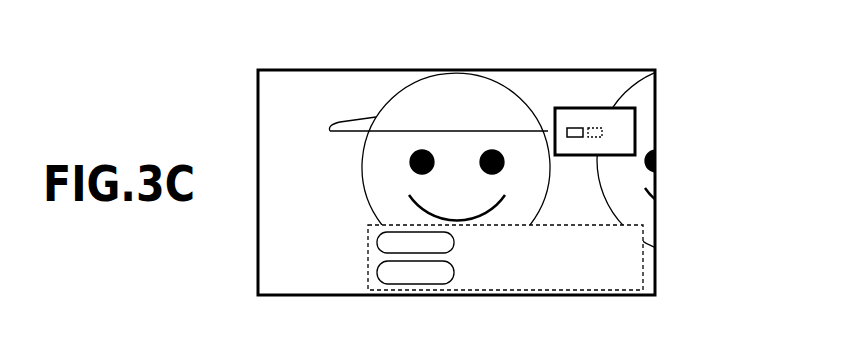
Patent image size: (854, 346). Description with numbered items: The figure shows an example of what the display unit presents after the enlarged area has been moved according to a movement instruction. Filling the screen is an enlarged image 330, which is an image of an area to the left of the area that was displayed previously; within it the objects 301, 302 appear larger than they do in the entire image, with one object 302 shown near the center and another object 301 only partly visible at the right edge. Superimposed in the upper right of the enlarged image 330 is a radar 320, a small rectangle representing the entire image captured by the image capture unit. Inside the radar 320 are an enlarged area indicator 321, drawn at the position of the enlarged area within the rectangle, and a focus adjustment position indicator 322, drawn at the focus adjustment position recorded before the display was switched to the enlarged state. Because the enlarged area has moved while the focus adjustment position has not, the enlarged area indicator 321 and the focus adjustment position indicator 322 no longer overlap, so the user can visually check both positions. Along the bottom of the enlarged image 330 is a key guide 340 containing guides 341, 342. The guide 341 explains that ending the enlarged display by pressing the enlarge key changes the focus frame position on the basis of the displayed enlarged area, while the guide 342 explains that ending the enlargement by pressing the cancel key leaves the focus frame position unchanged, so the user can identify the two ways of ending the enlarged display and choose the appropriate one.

The enlarged image 330 is at (313, 70).
The object 302 is at (387, 97).
The object 301 is at (636, 82).
The radar 320 is at (636, 140).
The enlarged area indicator 321 is at (573, 128).
The focus adjustment position indicator 322 is at (598, 128).
The key guide 340 is at (544, 281).
The guide 341 is at (605, 243).
The guide 342 is at (641, 272).